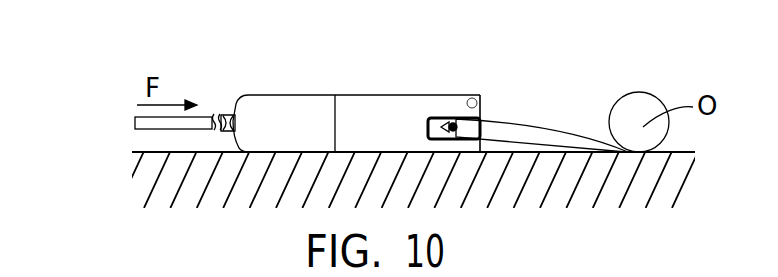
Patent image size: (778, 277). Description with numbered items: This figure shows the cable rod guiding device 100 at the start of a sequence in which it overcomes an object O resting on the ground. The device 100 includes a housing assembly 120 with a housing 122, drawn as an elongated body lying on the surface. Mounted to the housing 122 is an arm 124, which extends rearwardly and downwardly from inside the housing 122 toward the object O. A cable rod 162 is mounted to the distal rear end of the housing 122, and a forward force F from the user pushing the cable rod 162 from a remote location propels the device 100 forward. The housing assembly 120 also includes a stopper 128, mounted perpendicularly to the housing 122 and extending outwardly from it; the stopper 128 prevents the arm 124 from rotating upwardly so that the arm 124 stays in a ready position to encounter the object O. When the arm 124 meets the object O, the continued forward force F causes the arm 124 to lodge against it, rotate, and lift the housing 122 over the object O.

The cable rod guiding device 100 is at (236, 55).
The cable rod 162 is at (135, 121).
The housing assembly 120 is at (364, 87).
The housing 122 is at (458, 95).
The stopper 128 is at (477, 99).
The arm 124 is at (563, 131).